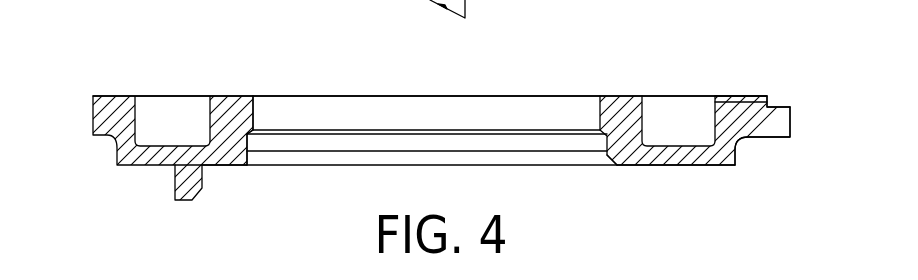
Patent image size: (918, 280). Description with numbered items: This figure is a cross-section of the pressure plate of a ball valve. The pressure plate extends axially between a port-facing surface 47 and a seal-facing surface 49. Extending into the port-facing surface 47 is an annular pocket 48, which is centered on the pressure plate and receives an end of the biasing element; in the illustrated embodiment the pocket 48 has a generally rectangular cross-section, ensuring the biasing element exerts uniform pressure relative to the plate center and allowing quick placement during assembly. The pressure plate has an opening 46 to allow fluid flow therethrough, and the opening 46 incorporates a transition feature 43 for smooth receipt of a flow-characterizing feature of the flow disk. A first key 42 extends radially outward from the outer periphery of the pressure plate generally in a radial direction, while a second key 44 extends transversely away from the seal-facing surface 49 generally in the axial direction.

The first key 42 is at (769, 138).
The transition feature 43 is at (250, 163).
The second key 44 is at (193, 200).
The opening 46 is at (498, 106).
The port-facing surface 47 is at (743, 96).
The annular pocket 48 is at (679, 106).
The seal-facing surface 49 is at (672, 165).